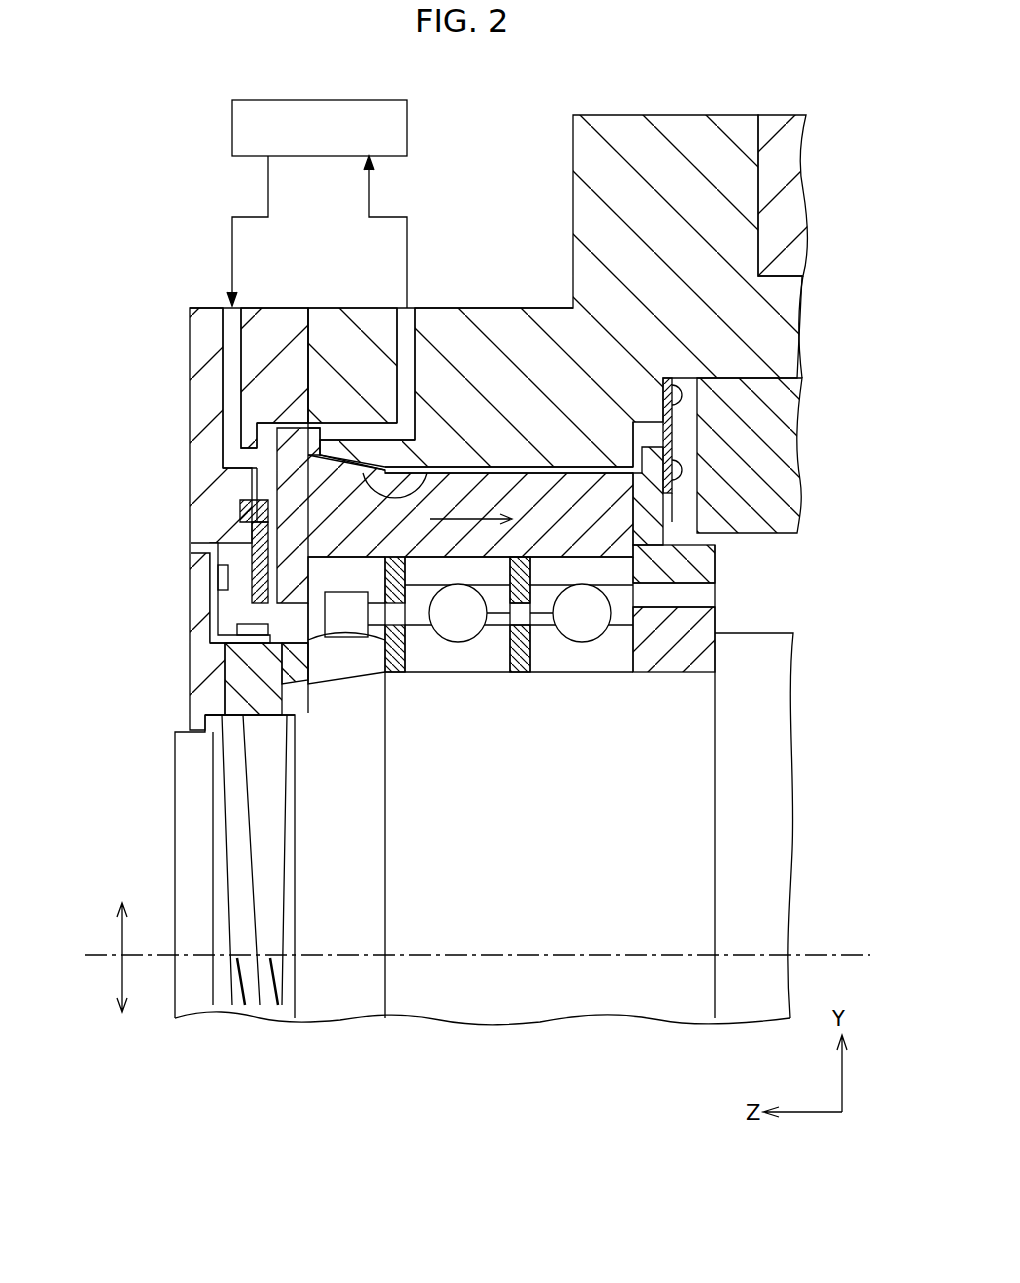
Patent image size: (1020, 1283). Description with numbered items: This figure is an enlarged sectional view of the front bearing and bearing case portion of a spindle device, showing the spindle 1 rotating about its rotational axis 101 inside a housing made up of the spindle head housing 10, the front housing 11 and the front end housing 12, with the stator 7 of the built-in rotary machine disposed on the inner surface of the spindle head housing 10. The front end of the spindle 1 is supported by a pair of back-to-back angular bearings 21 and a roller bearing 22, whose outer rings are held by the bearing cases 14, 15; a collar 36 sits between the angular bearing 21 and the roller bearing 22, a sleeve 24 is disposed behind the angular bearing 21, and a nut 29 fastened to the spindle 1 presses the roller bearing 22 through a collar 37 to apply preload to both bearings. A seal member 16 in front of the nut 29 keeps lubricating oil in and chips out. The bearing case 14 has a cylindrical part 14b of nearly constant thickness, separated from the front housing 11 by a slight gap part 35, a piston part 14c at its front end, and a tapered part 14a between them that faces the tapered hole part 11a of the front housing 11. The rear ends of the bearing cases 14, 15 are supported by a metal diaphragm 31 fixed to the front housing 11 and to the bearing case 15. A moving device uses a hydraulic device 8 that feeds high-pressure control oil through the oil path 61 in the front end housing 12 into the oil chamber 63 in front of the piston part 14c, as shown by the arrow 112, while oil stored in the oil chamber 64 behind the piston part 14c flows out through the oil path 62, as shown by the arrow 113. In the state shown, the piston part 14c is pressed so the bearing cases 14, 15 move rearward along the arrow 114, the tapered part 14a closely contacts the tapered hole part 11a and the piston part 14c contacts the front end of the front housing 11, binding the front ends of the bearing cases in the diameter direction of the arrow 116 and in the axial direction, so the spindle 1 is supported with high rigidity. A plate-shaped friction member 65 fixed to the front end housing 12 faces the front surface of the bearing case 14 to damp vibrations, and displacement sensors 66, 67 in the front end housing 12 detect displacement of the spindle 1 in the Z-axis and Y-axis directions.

The spindle 1 is at (765, 815).
The stator 7 is at (755, 490).
The hydraulic device 8 is at (232, 130).
The spindle head housing 10 is at (795, 148).
The front housing 11 is at (690, 130).
The tapered hole part 11a is at (437, 467).
The front end housing 12 is at (205, 340).
The bearing case 14 is at (640, 503).
The tapered part 14a is at (316, 440).
The cylindrical part 14b is at (540, 485).
The piston part 14c is at (295, 455).
The bearing case 15 is at (688, 567).
The seal member 16 is at (240, 690).
The angular bearing 21 is at (470, 668).
The roller bearing 22 is at (345, 665).
The sleeve 24 is at (715, 650).
The nut 29 is at (242, 700).
The diaphragm 31 is at (676, 452).
The gap part 35 is at (596, 470).
The collar 36 is at (395, 675).
The collar 37 is at (292, 665).
The oil path 61 is at (222, 395).
The oil path 62 is at (397, 333).
The oil chamber 63 is at (290, 487).
The oil chamber 64 is at (280, 330).
The friction member 65 is at (255, 525).
The displacement sensor 66 is at (222, 578).
The displacement sensor 67 is at (250, 622).
The rotational axis 101 is at (870, 940).
The arrow 112 is at (232, 250).
The arrow 113 is at (407, 250).
The arrow 114 is at (460, 518).
The arrow 116 is at (122, 930).